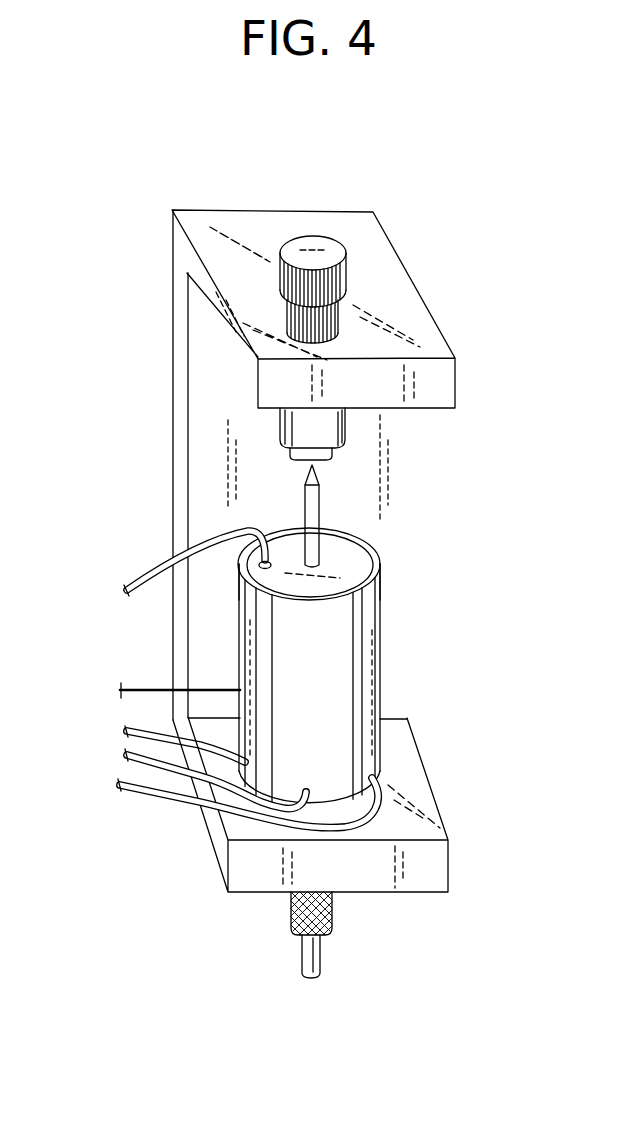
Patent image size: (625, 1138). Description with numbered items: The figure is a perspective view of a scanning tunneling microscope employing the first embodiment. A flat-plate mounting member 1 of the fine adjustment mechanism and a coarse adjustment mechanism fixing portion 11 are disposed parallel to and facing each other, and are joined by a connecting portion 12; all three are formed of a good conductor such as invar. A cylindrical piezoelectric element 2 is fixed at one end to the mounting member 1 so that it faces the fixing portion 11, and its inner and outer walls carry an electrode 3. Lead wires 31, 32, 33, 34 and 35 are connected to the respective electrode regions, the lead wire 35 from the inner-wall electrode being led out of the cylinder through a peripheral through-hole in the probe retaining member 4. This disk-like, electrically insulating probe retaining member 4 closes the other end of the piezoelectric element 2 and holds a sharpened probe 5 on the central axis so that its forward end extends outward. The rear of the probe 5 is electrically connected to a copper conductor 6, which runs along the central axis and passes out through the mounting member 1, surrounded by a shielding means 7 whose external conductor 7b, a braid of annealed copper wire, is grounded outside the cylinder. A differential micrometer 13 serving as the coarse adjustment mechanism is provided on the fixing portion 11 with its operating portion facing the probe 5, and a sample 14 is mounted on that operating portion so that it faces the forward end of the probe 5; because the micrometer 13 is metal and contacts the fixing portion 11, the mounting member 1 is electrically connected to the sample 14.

The mounting member 1 is at (433, 797).
The piezoelectric element 2 is at (381, 585).
The electrode 3 is at (381, 618).
The probe retaining member 4 is at (352, 555).
The probe 5 is at (319, 500).
The conductor 6 is at (322, 952).
The shielding means 7 is at (323, 920).
The external conductor 7b is at (290, 920).
The coarse adjustment mechanism fixing portion 11 is at (453, 348).
The connecting portion 12 is at (172, 443).
The differential micrometer 13 is at (347, 322).
The sample 14 is at (332, 453).
The lead wire 31 is at (150, 791).
The lead wire 32 is at (125, 731).
The lead wire 33 is at (140, 687).
The lead wire 34 is at (125, 753).
The lead wire 35 is at (142, 575).